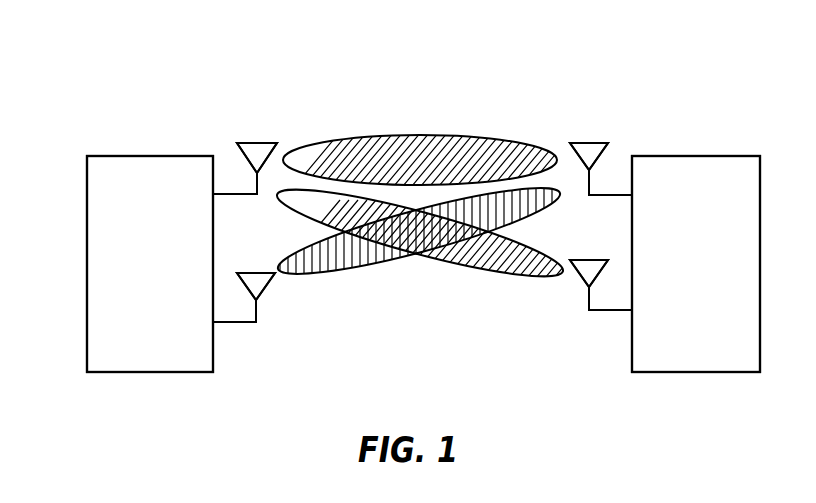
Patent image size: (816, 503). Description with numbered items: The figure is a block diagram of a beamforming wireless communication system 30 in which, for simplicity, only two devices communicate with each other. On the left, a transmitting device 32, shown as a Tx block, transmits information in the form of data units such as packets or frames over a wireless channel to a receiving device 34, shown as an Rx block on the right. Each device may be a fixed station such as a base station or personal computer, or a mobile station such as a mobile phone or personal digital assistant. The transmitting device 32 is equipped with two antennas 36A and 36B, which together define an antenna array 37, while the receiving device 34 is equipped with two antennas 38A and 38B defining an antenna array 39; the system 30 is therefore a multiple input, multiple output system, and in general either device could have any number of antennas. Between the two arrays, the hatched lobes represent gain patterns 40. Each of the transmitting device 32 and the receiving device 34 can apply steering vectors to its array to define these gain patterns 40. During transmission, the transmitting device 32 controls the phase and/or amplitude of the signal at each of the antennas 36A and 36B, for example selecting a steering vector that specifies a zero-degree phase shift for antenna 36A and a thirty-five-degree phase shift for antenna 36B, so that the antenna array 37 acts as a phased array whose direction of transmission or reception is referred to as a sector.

The wireless communication system 30 is at (152, 70).
The transmitting device 32 is at (150, 373).
The receiving device 34 is at (698, 373).
The antenna 36A is at (254, 142).
The antenna 36B is at (254, 272).
The antenna array 37 is at (255, 380).
The antenna 38A is at (590, 142).
The antenna 38B is at (589, 259).
The antenna array 39 is at (606, 406).
The gain pattern 40 is at (454, 120).